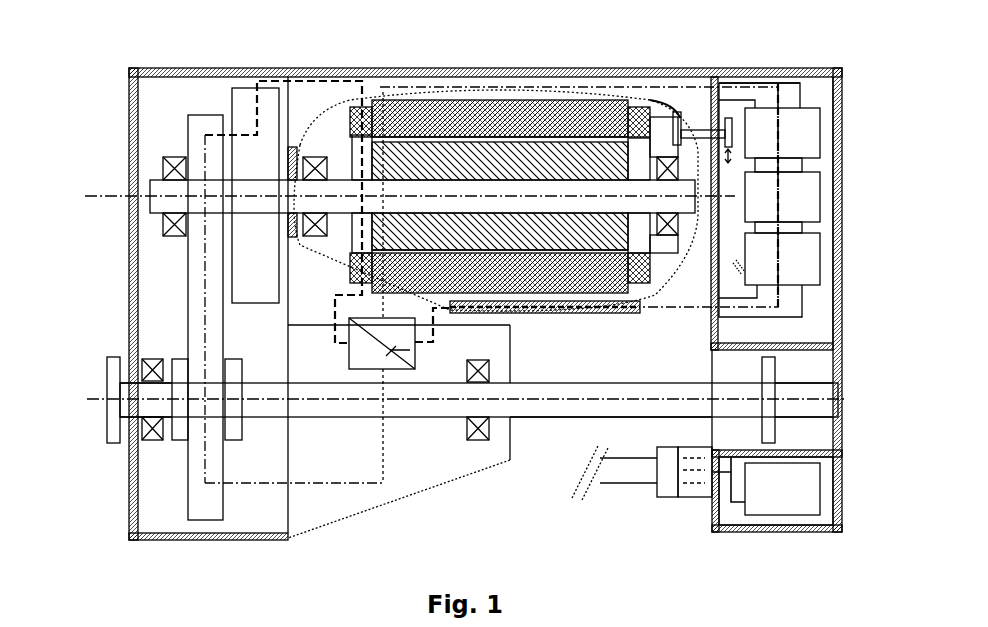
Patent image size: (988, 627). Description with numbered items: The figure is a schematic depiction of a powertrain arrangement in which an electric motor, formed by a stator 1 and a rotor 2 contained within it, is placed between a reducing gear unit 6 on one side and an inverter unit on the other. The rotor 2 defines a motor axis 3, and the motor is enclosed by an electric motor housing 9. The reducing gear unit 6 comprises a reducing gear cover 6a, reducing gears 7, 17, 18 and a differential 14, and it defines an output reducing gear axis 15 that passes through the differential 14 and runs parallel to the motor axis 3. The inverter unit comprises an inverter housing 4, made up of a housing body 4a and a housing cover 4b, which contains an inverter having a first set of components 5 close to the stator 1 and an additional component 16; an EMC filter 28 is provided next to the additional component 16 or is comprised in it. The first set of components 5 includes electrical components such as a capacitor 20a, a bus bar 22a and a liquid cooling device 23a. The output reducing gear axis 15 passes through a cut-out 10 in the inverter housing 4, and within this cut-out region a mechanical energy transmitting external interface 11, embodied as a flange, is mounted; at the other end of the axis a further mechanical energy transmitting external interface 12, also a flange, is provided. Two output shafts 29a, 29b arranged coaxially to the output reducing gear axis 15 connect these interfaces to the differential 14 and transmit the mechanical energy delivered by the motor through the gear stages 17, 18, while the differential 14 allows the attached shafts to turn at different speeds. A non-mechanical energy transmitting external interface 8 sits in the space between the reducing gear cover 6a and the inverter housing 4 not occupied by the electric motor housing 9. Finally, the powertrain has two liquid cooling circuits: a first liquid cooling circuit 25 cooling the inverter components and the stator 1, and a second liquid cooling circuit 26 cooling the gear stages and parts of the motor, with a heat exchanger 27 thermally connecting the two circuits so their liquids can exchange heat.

The stator 1 is at (538, 118).
The rotor 2 is at (415, 157).
The motor axis 3 is at (107, 197).
The inverter housing 4 is at (802, 50).
The housing body 4a is at (812, 340).
The housing cover 4b is at (835, 183).
The first set of components 5 is at (800, 137).
The reducing gear unit 6 is at (113, 100).
The reducing gear cover 6a is at (197, 68).
The reducing gear 7 is at (165, 278).
The non-mechanical energy transmitting external interface 8 is at (680, 447).
The electric motor housing 9 is at (623, 65).
The cut-out 10 is at (800, 438).
The mechanical energy transmitting external interface 11 is at (773, 383).
The mechanical energy transmitting external interface 12 is at (117, 355).
The differential 14 is at (173, 440).
The output reducing gear axis 15 is at (100, 400).
The additional component 16 is at (805, 505).
The gear stage 17 is at (279, 98).
The gear stage 18 is at (187, 277).
The capacitor 20a is at (757, 135).
The bus bar 22a is at (692, 127).
The liquid cooling device 23a is at (800, 88).
The first liquid cooling circuit 25 is at (587, 307).
The second liquid cooling circuit 26 is at (383, 460).
The heat exchanger 27 is at (387, 355).
The EMC filter 28 is at (807, 478).
The output shaft 29a is at (137, 403).
The output shaft 29b is at (588, 410).